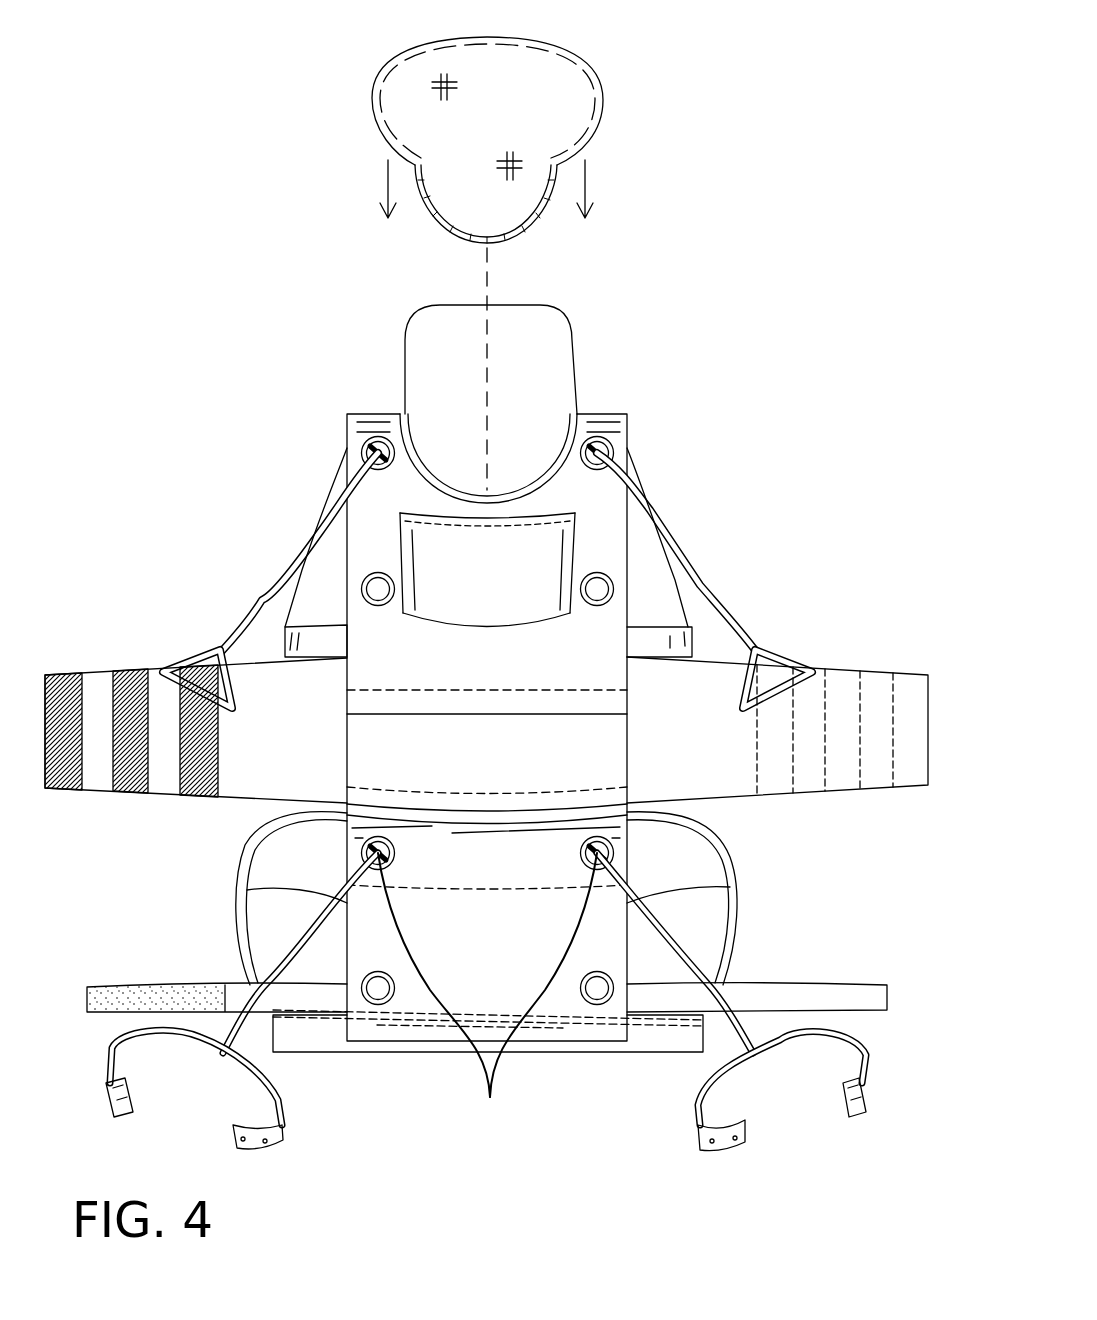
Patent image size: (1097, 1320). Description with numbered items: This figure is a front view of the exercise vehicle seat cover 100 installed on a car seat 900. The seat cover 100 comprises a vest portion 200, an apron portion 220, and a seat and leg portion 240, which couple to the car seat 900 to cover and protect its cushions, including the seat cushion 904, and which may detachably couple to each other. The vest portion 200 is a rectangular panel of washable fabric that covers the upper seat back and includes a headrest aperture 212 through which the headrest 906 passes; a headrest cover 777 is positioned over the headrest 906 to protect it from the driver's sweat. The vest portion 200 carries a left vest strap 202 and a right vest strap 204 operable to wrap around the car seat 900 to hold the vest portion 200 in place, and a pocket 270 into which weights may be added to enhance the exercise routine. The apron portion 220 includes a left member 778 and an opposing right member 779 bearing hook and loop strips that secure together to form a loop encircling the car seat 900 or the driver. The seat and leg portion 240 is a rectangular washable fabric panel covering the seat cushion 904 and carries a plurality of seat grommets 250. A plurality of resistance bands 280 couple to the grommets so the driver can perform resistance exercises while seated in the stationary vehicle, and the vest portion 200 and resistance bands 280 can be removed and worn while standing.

The exercise vehicle seat cover 100 is at (840, 125).
The headrest cover 777 is at (600, 88).
The headrest 906 is at (560, 324).
The headrest aperture 212 is at (443, 481).
The vest portion 200 is at (522, 672).
The apron portion 220 is at (524, 782).
The seat and leg portion 240 is at (522, 962).
The pocket 270 is at (548, 543).
The right vest strap 204 is at (312, 632).
The left vest strap 202 is at (692, 648).
The resistance bands 280 is at (700, 580).
The left member 778 is at (270, 697).
The right waist belt 779 is at (712, 767).
The car seat 900 is at (242, 898).
The seat cushion 904 is at (692, 865).
The seat grommets 250 is at (490, 1090).